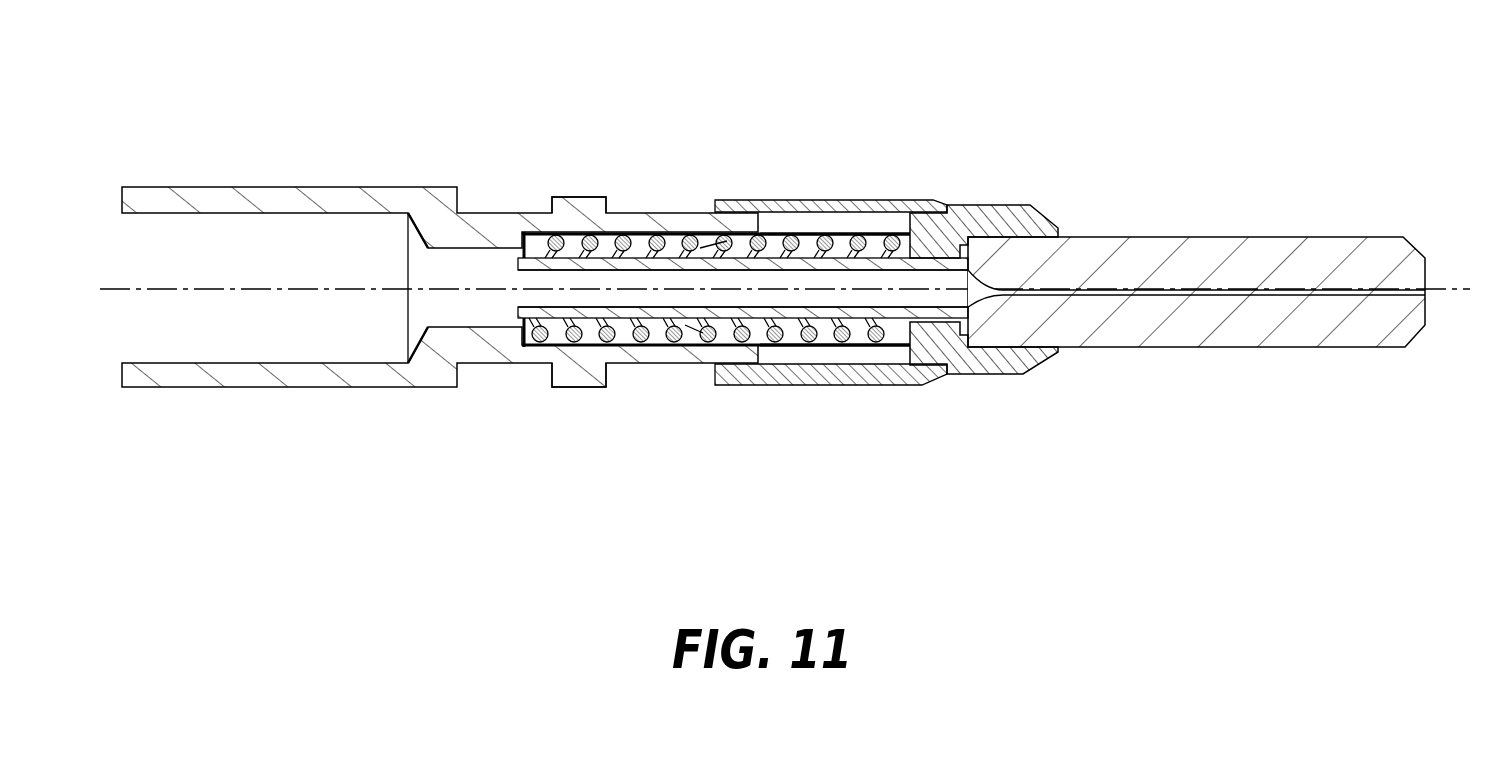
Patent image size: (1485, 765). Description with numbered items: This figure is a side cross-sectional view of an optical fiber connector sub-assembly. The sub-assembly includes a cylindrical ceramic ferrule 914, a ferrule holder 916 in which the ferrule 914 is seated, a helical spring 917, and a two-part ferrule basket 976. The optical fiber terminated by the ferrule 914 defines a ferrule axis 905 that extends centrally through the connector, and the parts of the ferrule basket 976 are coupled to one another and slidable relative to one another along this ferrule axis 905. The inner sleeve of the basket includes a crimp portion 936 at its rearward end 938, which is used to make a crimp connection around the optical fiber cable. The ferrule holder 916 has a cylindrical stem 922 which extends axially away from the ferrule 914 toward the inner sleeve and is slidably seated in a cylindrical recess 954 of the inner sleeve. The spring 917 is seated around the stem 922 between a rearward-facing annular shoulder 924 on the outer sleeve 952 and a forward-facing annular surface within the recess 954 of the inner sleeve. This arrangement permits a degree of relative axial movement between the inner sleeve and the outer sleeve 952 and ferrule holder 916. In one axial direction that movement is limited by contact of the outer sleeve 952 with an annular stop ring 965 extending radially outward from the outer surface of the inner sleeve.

The rearward end 938 is at (121, 167).
The crimp portion 936 is at (308, 198).
The ferrule axis 905 is at (228, 289).
The annular stop ring 965 is at (585, 210).
The outer sleeve 952 is at (526, 252).
The cylindrical stem 922 is at (903, 263).
The cylindrical recess 954 is at (623, 337).
The helical spring 917 is at (843, 345).
The ferrule basket 976 is at (753, 187).
The rearward-facing annular shoulder 924 is at (905, 337).
The ferrule 914 is at (1207, 253).
The ferrule holder 916 is at (983, 225).